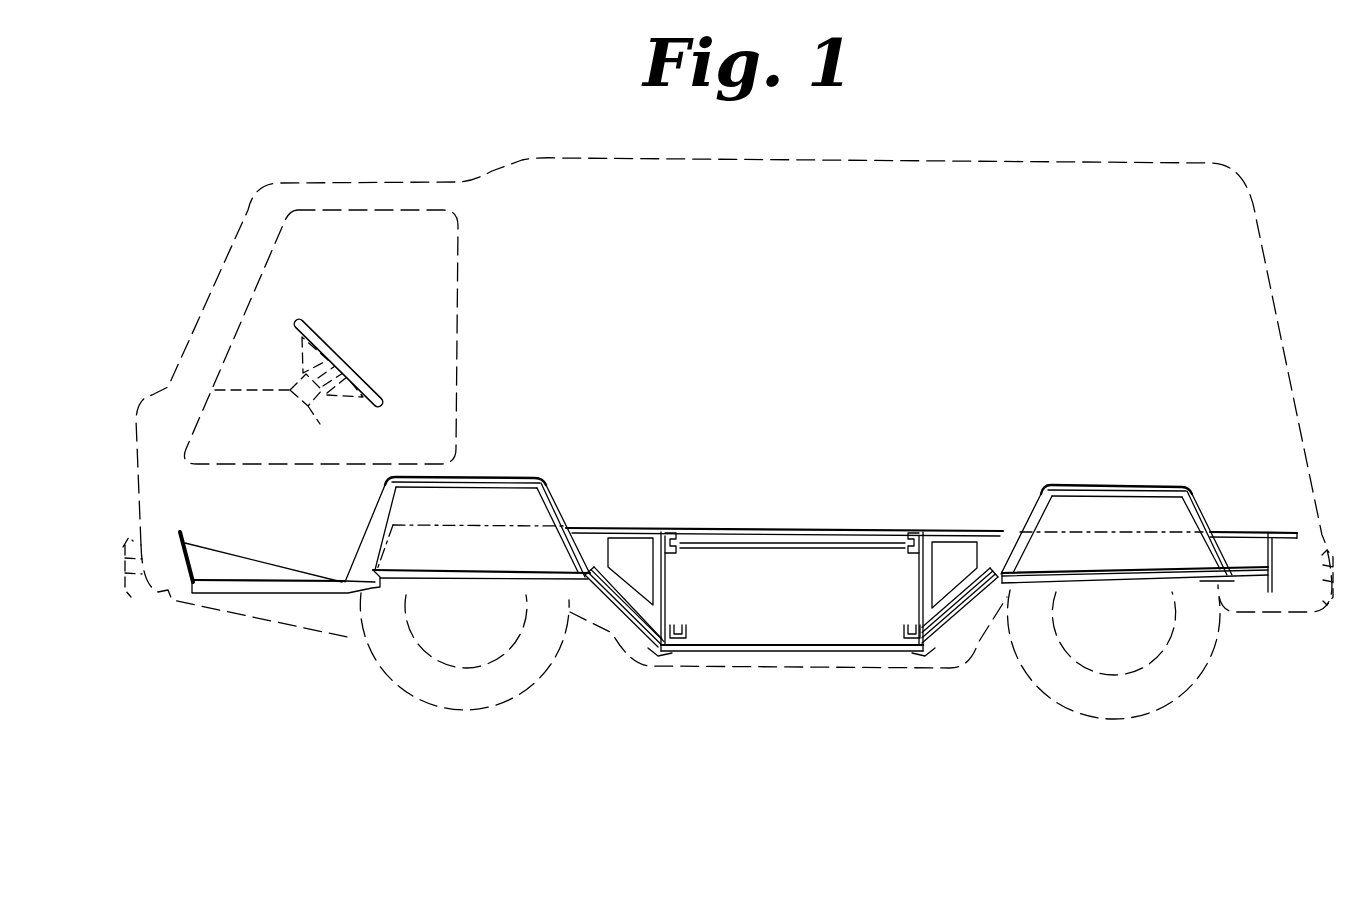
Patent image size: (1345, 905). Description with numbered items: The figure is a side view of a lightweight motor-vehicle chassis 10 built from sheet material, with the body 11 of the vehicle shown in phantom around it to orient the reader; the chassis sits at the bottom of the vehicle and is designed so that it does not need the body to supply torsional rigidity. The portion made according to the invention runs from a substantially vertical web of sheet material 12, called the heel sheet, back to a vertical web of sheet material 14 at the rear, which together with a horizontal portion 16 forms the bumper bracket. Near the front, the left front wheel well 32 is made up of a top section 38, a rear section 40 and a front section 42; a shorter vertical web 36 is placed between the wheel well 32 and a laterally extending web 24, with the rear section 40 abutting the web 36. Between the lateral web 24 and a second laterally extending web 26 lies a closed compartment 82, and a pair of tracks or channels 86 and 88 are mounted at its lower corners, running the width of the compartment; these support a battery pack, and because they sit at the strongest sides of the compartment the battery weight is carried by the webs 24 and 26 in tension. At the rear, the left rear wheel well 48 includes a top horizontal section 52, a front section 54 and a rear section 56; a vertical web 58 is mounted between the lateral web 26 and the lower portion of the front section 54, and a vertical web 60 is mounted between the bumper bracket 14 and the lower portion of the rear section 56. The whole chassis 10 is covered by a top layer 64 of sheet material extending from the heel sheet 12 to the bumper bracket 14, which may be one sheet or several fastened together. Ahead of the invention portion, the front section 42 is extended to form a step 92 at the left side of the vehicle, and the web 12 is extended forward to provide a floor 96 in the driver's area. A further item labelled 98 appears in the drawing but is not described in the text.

The chassis 10 is at (786, 717).
The body 11 is at (913, 158).
The web of sheet material 12 is at (388, 546).
The vertical web of sheet material 14 is at (1276, 563).
The horizontal portion 16 is at (1284, 530).
The laterally extending web 24 is at (673, 534).
The laterally extending web 26 is at (927, 535).
The left front wheel well 32 is at (467, 504).
The vertical web 36 is at (595, 537).
The top section 38 is at (545, 481).
The rear section 40 is at (563, 500).
The front section 42 is at (377, 510).
The left rear wheel well 48 is at (1119, 507).
The top, horizontal section 52 is at (1117, 484).
The front section 54 is at (1033, 499).
The rear section 56 is at (1202, 500).
The vertical web 58 is at (988, 538).
The vertical web 60 is at (1248, 561).
The top layer of sheet material 64 is at (447, 523).
The compartment 82 is at (793, 603).
The track or channel 86 is at (690, 620).
The track or channel 88 is at (901, 627).
The step 92 is at (247, 587).
The floor 96 is at (247, 553).
The front end plate 98 is at (182, 567).